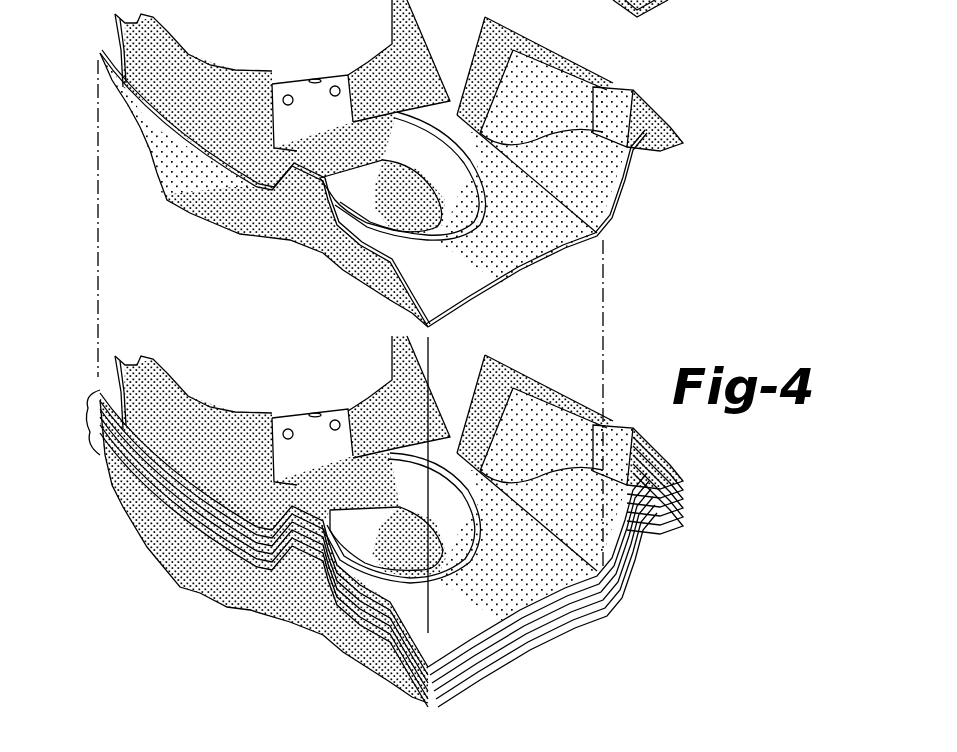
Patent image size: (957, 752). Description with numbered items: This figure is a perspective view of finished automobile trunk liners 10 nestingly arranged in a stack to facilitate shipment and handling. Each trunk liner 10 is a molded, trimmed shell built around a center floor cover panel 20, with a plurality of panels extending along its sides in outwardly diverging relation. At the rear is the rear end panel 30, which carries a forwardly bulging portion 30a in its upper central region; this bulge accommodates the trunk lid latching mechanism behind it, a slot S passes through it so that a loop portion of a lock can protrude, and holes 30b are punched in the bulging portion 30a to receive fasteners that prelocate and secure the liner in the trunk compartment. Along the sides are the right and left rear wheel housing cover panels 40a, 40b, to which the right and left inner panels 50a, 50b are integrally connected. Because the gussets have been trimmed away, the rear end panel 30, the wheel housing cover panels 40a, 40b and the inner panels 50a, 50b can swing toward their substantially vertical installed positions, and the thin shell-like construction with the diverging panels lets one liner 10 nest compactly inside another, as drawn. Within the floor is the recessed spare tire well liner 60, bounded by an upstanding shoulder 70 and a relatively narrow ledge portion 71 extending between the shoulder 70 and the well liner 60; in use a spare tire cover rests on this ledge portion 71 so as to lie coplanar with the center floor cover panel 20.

The trunk liner 10 is at (717, 220).
The center floor cover panel 20 is at (513, 253).
The rear end panel 30 is at (223, 97).
The forwardly bulging portion 30a is at (290, 90).
The holes 30b is at (333, 90).
The slot S is at (315, 77).
The right rear wheel housing cover panel 40a is at (323, 250).
The left rear wheel housing cover panel 40b is at (603, 163).
The right inner panel 50a is at (137, 130).
The left inner panel 50b is at (505, 33).
The spare tire well liner 60 is at (370, 530).
The upstanding shoulder 70 is at (477, 220).
The ledge portion 71 is at (450, 222).